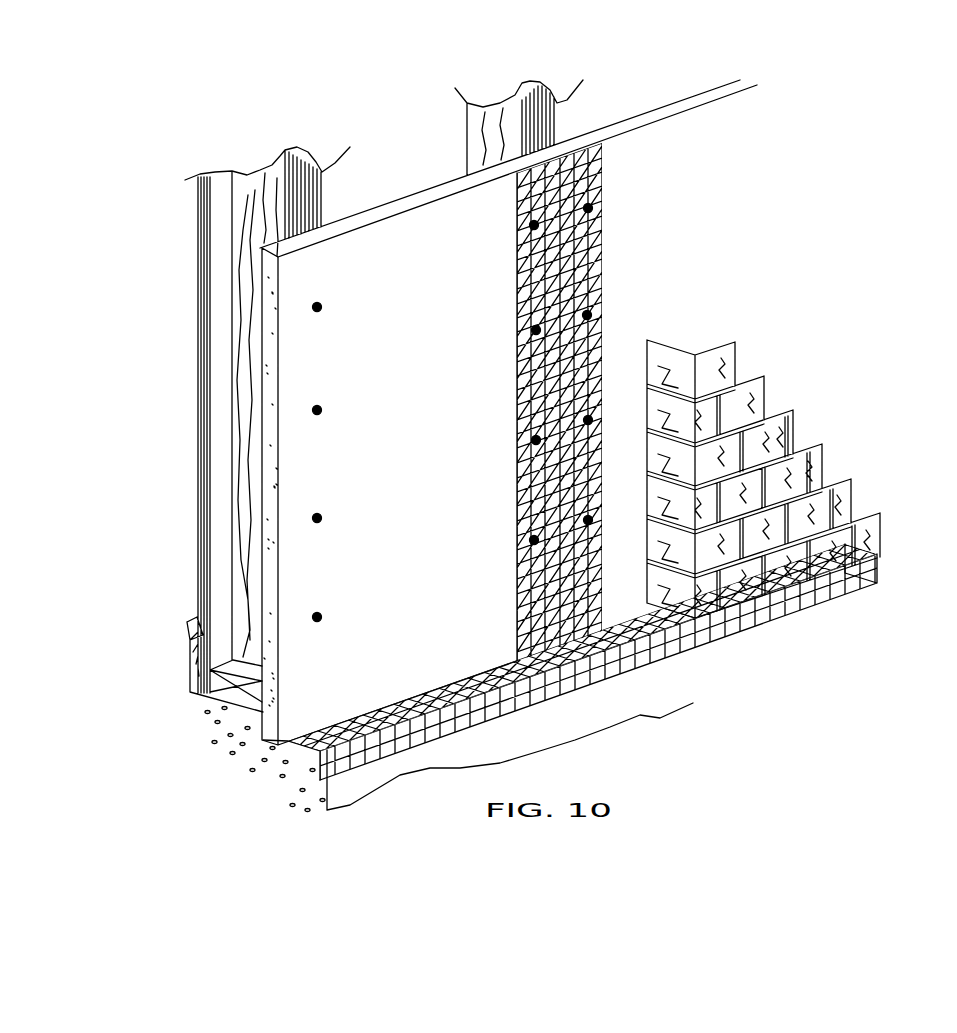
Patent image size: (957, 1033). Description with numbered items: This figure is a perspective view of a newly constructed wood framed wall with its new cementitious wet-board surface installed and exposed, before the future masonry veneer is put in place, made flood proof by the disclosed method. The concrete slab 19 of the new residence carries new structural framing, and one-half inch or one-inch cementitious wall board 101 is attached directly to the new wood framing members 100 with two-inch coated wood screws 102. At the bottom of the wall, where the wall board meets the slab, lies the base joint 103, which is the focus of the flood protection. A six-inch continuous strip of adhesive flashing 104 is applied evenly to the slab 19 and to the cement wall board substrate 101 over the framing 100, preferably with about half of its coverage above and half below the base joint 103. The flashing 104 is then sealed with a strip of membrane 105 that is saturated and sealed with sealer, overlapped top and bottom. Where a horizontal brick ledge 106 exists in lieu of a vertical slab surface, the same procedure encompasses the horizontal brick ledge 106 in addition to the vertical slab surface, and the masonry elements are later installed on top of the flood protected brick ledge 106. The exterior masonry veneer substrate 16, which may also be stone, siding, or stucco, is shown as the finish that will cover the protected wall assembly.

The wood framing members 100 is at (258, 203).
The cementitious wall board 101 is at (383, 453).
The coated wood screws 102 is at (536, 225).
The base joint 103 is at (600, 677).
The adhesive flashing 104 is at (267, 748).
The membrane 105 is at (673, 652).
The horizontal brick ledge 106 is at (307, 750).
The exterior masonry veneer substrate 16 is at (735, 410).
The concrete slab 19 is at (408, 772).